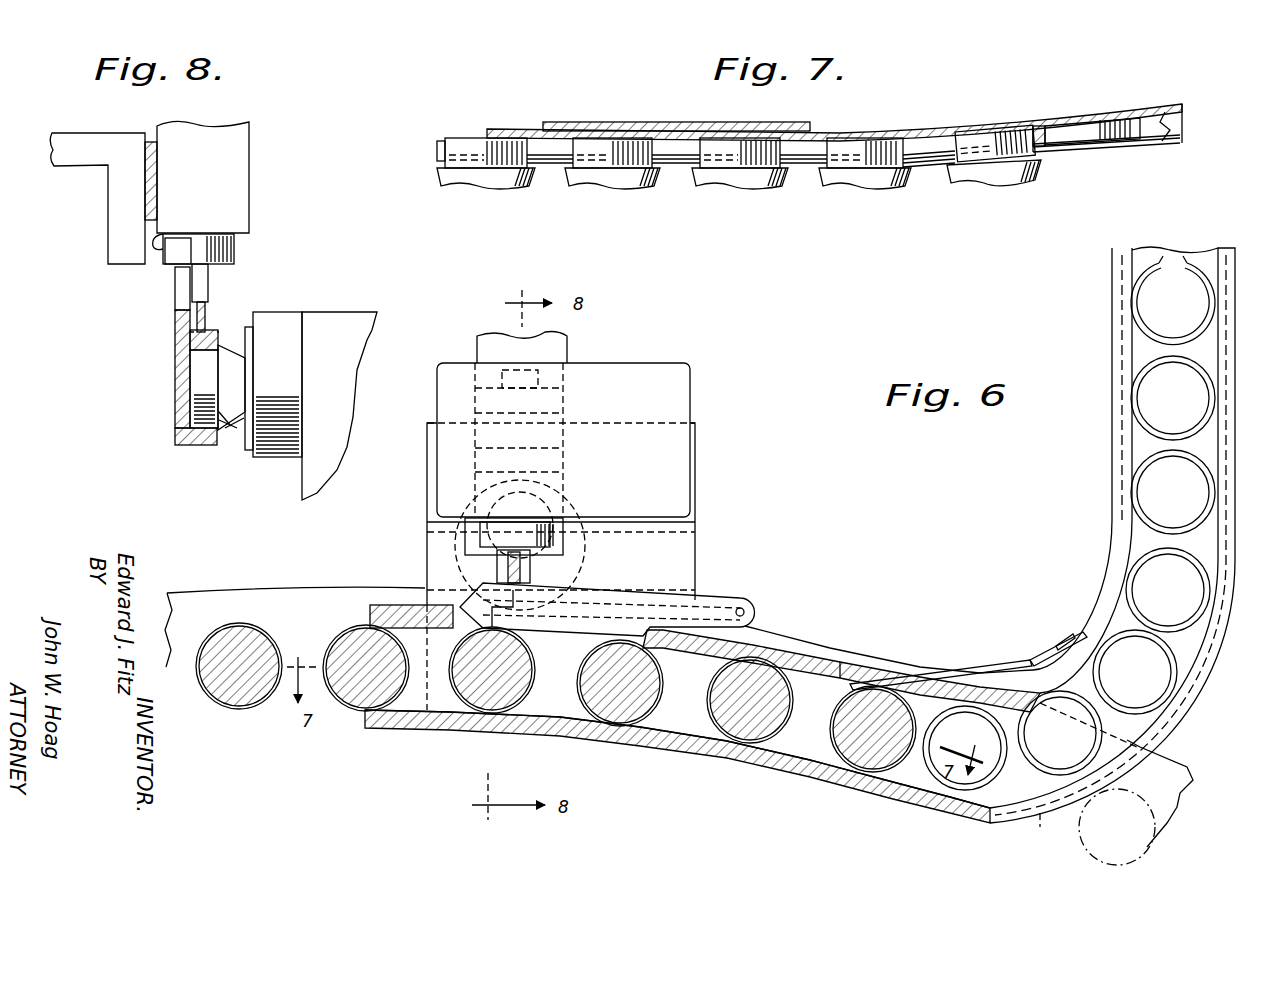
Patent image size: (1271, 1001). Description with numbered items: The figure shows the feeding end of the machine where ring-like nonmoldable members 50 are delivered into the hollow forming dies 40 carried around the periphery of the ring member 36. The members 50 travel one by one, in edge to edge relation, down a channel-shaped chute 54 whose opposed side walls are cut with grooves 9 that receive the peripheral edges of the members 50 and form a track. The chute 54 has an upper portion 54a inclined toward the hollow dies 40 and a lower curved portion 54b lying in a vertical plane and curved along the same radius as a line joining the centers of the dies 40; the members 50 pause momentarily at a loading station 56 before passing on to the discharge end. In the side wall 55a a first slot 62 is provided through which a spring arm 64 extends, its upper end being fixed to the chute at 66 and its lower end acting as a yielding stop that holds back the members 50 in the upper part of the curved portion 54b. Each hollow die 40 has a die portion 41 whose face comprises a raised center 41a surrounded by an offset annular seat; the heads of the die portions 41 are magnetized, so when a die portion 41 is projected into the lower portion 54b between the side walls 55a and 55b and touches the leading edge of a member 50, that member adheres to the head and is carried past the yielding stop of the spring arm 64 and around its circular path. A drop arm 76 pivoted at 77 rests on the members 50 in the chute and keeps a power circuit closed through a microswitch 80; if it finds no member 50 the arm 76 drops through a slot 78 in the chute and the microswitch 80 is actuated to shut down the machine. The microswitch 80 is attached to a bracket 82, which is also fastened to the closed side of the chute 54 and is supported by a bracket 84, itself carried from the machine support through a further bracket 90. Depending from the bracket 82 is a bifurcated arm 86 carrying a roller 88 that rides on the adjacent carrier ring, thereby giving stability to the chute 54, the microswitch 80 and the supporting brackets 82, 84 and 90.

In FIG. 8, the grooves 9 is at (208, 333).
In FIG. 7, the grooves 9 is at (933, 158).
In FIG. 8, the ring member 36 is at (355, 311).
In FIG. 8, the forming die members 40 is at (283, 330).
In FIG. 6, the forming die members 40 is at (1077, 827).
In FIG. 8, the die portion 41 is at (232, 432).
In FIG. 7, the die portion 41 is at (487, 181).
In FIG. 8, the raised center 41a is at (204, 375).
In FIG. 7, the raised center 41a is at (755, 177).
In FIG. 6, the raised center 41a is at (233, 683).
In FIG. 7, the nonmoldable members 50 is at (660, 150).
In FIG. 6, the nonmoldable members 50 is at (357, 707).
In FIG. 7, the chute 54 is at (1160, 99).
In FIG. 6, the chute 54 is at (1100, 477).
In FIG. 6, the upper portion of chute 54a is at (1112, 280).
In FIG. 8, the lower curved portion of chute 54b is at (180, 408).
In FIG. 7, the lower curved portion of chute 54b is at (918, 128).
In FIG. 6, the lower curved portion of chute 54b is at (795, 767).
In FIG. 8, the side wall of chute 55a is at (180, 318).
In FIG. 6, the side wall of chute 55a is at (798, 655).
In FIG. 8, the side wall of chute 55b is at (196, 450).
In FIG. 7, the side wall of chute 55b is at (1185, 125).
In FIG. 6, the side wall of chute 55b is at (727, 750).
In FIG. 7, the loading station 56 is at (986, 110).
In FIG. 6, the loading station 56 is at (889, 776).
In FIG. 6, the first slot 62 is at (865, 667).
In FIG. 6, the spring arm 64 is at (1003, 667).
In FIG. 6, the fixing point of spring arm 66 is at (1065, 637).
In FIG. 8, the drop arm 76 is at (200, 310).
In FIG. 7, the drop arm 76 is at (741, 157).
In FIG. 6, the drop arm 76 is at (577, 590).
In FIG. 6, the pivot 77 is at (744, 608).
In FIG. 8, the slot 78 is at (190, 332).
In FIG. 6, the slot 78 is at (642, 613).
In FIG. 8, the microswitch 80 is at (232, 152).
In FIG. 6, the microswitch 80 is at (677, 390).
In FIG. 8, the bracket 82 is at (157, 182).
In FIG. 7, the bracket 82 is at (568, 121).
In FIG. 6, the bracket 82 is at (427, 497).
In FIG. 8, the bracket 84 is at (80, 132).
In FIG. 6, the bracket 84 is at (565, 418).
In FIG. 6, the bifurcated arm 86 is at (563, 492).
In FIG. 6, the roller 88 is at (577, 548).
In FIG. 6, the bracket 90 is at (555, 352).